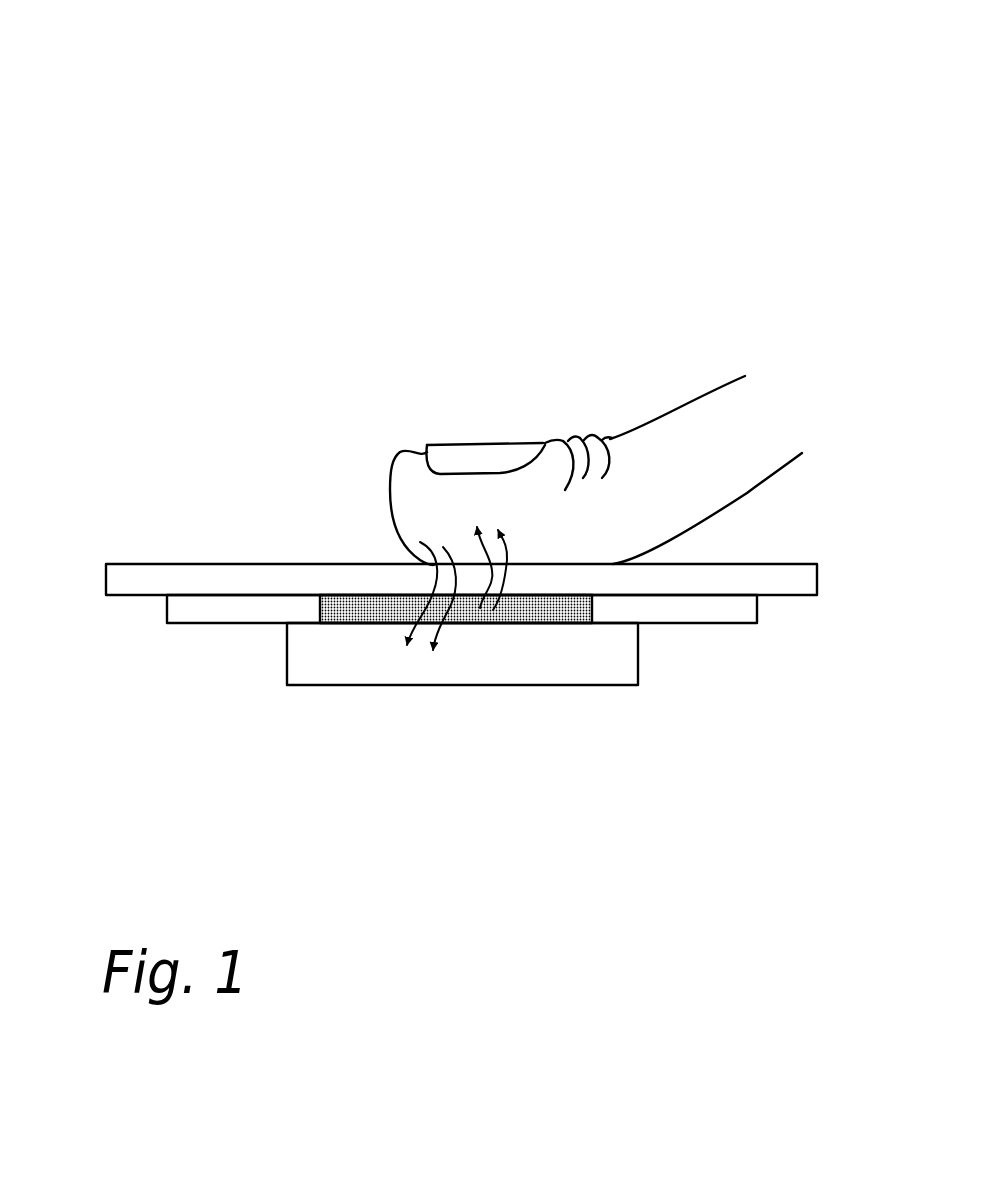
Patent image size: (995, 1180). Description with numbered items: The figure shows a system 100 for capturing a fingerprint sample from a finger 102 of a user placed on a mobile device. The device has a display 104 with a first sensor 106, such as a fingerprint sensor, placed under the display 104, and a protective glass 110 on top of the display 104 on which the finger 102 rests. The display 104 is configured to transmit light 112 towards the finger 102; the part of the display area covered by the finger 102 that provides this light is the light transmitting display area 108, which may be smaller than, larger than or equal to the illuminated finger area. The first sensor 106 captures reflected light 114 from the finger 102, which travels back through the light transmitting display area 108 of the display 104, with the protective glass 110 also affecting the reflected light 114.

The system 100 is at (96, 149).
The finger 102 is at (680, 441).
The display 104 is at (192, 610).
The first sensor 106 is at (608, 663).
The light transmitting display area 108 is at (513, 615).
The protective glass 110 is at (786, 578).
The transmitted light 112 is at (480, 584).
The reflected light 114 is at (433, 595).